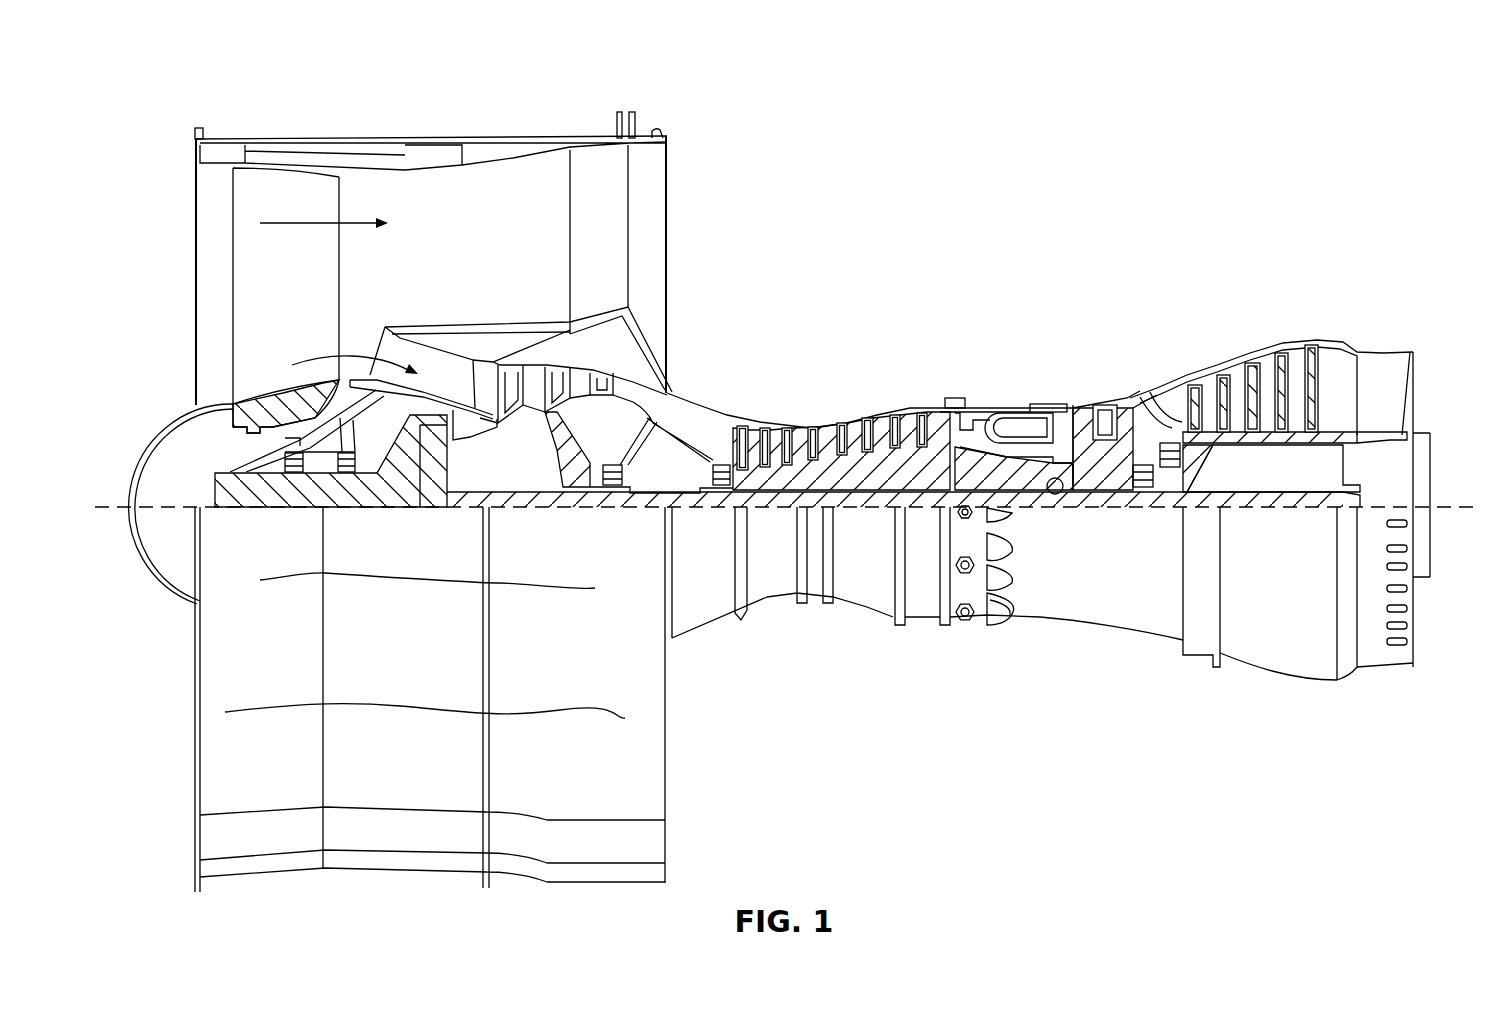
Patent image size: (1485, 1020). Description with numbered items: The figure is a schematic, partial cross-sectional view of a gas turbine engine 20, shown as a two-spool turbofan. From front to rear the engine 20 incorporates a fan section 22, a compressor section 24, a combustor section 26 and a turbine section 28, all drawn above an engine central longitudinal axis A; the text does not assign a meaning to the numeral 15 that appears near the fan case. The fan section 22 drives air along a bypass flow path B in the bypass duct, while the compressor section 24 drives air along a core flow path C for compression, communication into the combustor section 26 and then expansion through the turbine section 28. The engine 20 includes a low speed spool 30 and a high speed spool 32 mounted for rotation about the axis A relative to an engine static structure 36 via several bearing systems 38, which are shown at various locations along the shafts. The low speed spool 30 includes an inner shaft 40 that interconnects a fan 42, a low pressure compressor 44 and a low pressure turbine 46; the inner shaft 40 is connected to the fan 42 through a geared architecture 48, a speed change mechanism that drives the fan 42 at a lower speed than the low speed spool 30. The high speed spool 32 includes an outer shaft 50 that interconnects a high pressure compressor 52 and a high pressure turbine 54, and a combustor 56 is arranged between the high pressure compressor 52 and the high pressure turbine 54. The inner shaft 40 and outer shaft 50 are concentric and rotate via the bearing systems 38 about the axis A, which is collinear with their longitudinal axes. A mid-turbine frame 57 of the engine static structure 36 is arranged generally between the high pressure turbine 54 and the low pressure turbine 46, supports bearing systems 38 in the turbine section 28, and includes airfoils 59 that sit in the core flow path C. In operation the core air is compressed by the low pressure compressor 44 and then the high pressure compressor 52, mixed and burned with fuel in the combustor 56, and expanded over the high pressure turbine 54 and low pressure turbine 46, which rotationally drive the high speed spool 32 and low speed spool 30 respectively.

The gas turbine engine 20 is at (1305, 104).
The fan section 22 is at (289, 134).
The fan case / nacelle 15 is at (433, 137).
The compressor section 24 is at (720, 385).
The combustor section 26 is at (998, 318).
The turbine section 28 is at (1180, 302).
The low speed spool 30 is at (884, 514).
The high speed spool 32 is at (943, 457).
The engine static structure 36 is at (921, 628).
The bearing systems 38 is at (612, 484).
The inner shaft 40 is at (722, 504).
The fan 42 is at (265, 278).
The low pressure compressor 44 is at (560, 380).
The low pressure turbine 46 is at (1270, 362).
The geared architecture 48 is at (433, 475).
The outer shaft 50 is at (1060, 488).
The high pressure compressor 52 is at (832, 422).
The high pressure turbine 54 is at (1108, 400).
The combustor 56 is at (1022, 426).
The mid-turbine frame 57 is at (1150, 388).
The airfoils 59 is at (1167, 421).
The engine central longitudinal axis A is at (1440, 505).
The bypass flow path B is at (325, 222).
The core flow path C is at (292, 365).